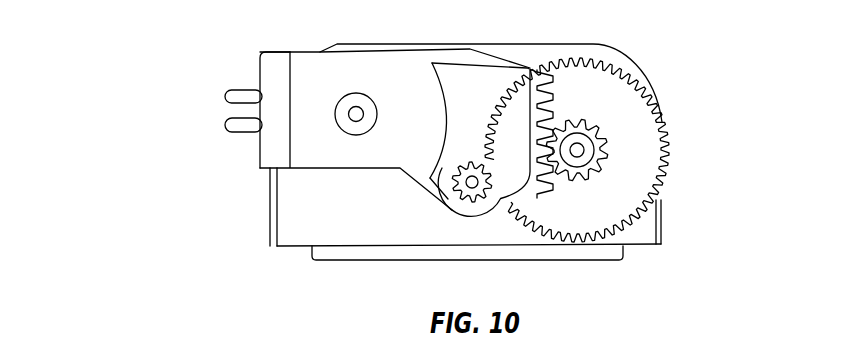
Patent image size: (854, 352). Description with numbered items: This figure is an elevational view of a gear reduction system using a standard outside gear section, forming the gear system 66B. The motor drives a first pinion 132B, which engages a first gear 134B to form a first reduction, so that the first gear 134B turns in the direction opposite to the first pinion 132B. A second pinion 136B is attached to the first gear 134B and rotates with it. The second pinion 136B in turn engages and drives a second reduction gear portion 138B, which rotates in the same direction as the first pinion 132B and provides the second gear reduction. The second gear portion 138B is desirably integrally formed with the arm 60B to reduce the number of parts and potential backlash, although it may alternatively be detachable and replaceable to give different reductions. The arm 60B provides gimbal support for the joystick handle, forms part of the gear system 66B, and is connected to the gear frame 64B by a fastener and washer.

The gear system 66B is at (140, 30).
The arm 60B is at (278, 52).
The gear frame 64B is at (278, 250).
The second reduction gear portion 138B is at (470, 54).
The first gear 134B is at (638, 76).
The second pinion 136B is at (608, 161).
The first pinion 132B is at (456, 201).